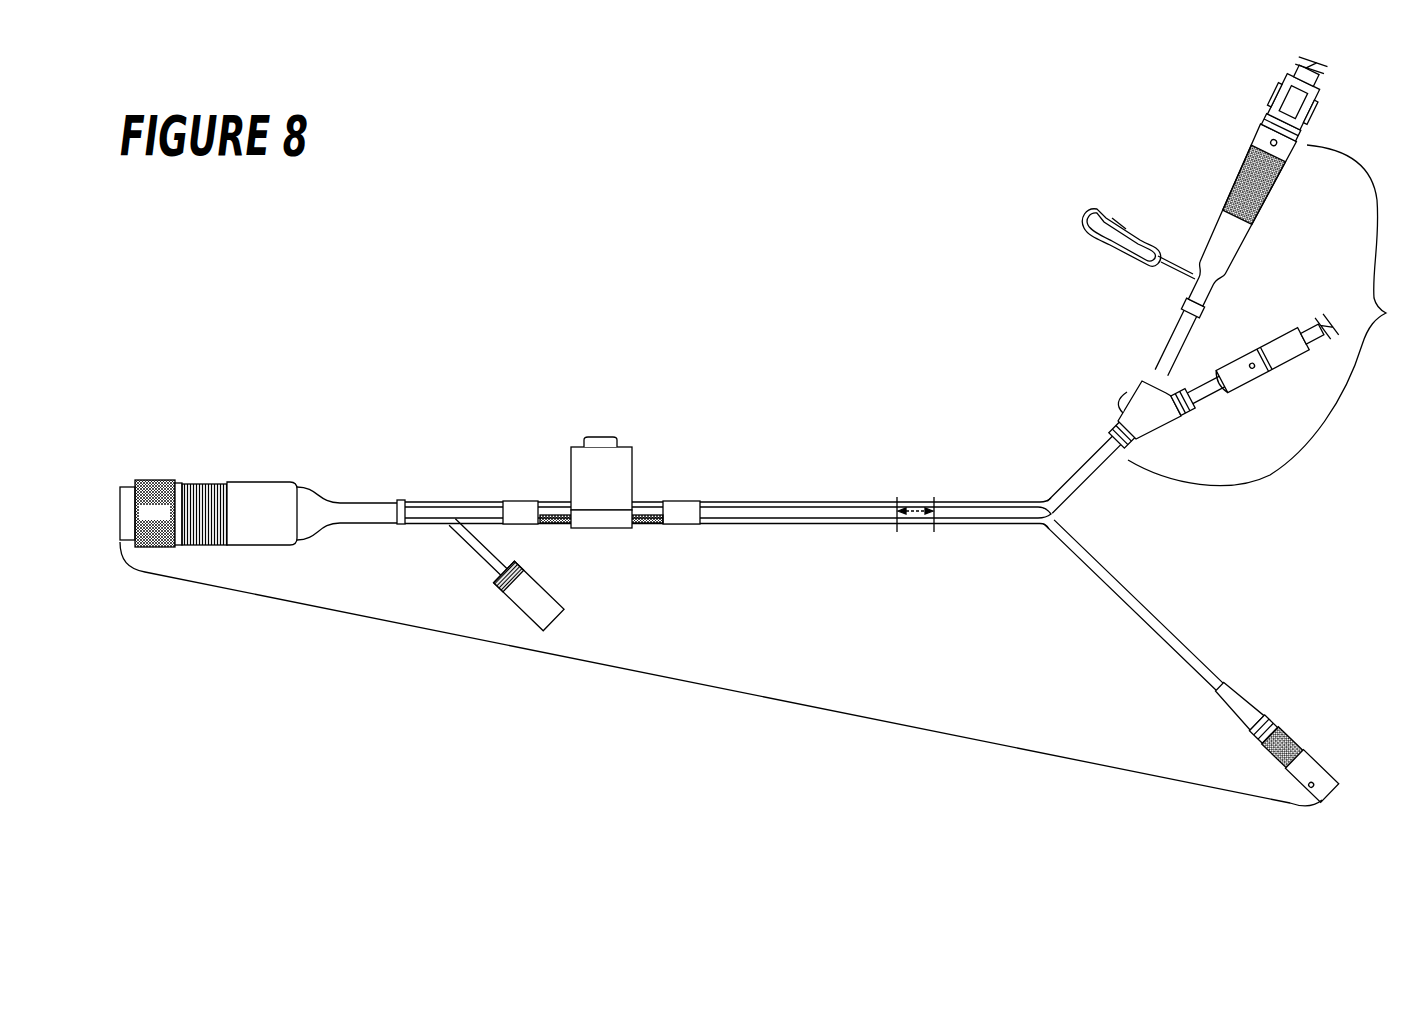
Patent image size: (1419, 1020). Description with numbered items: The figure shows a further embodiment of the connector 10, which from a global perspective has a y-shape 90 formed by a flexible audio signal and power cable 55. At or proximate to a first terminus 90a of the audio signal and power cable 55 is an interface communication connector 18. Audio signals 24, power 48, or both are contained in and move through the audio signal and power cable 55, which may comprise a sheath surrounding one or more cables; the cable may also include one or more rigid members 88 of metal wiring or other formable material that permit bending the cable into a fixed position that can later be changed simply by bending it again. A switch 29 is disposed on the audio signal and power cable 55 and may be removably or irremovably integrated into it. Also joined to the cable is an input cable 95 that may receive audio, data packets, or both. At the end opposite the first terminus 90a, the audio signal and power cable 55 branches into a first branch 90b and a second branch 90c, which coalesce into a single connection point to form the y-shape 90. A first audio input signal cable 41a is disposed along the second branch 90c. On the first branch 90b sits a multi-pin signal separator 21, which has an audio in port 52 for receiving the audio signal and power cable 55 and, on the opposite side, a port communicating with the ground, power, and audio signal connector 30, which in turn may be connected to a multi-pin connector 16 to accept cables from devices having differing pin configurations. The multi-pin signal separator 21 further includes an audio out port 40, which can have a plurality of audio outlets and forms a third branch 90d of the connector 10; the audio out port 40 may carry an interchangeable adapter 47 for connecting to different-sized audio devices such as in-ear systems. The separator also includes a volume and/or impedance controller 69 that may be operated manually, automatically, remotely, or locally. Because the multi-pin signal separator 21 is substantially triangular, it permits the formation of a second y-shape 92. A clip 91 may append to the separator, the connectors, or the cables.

The connector 10 is at (157, 232).
The interface communication connector 18 is at (260, 496).
The first terminus 90a is at (403, 524).
The audio signal and power cable 55 is at (820, 510).
The switch 29 is at (597, 437).
The power 48 is at (912, 506).
The rigid member 88 is at (922, 507).
The audio signals 24 is at (920, 523).
The input cable 95 is at (541, 585).
The first branch 90b is at (1093, 477).
The audio in port 52 is at (1106, 432).
The multi-pin signal separator 21 is at (1155, 415).
The volume and/or impedance controller 69 is at (1127, 395).
The third branch 90d is at (1208, 397).
The audio out port 40 is at (1263, 383).
The adapter 47 is at (1279, 341).
The ground, power, and audio signal connector 30 is at (1293, 160).
The multi-pin connector 16 is at (1275, 99).
The clip 91 is at (1090, 240).
The second y-shape 92 is at (1272, 315).
The second branch 90c is at (1177, 612).
The first audio input signal cable 41a is at (1318, 772).
The y-shape 90 is at (712, 688).